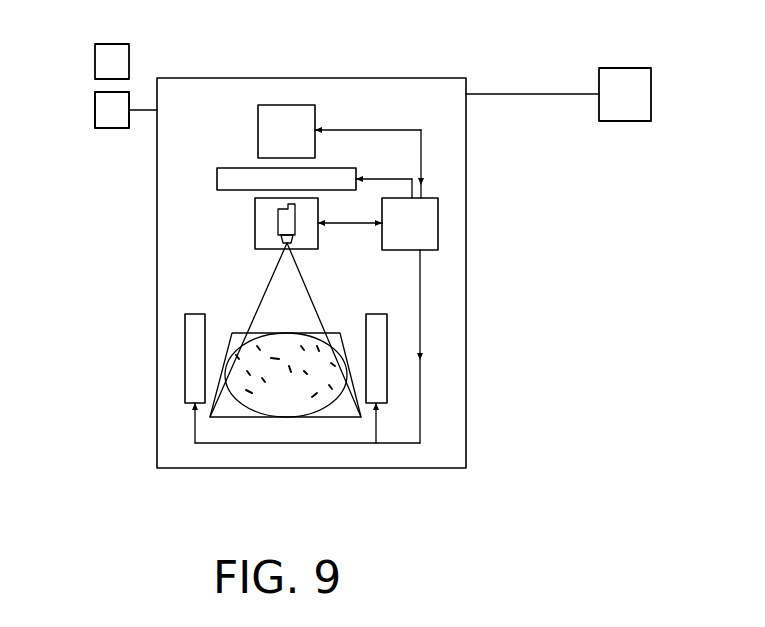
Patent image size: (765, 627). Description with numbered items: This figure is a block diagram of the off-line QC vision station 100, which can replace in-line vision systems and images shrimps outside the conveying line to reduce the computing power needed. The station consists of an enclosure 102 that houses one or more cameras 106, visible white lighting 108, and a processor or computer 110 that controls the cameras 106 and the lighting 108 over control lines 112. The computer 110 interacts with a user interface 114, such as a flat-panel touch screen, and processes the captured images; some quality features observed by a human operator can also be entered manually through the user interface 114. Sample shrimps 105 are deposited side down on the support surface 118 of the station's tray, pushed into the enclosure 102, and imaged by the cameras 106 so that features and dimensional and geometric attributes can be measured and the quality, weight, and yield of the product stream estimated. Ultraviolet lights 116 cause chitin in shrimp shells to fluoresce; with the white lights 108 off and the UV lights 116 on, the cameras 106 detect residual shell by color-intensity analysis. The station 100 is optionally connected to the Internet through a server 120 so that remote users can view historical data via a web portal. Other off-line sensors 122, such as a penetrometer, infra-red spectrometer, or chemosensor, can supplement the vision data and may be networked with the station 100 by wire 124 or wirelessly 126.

The off-line QC vision station 100 is at (476, 70).
The enclosure 102 is at (157, 433).
The shrimps 105 is at (311, 400).
The cameras 106 is at (258, 218).
The visible white lighting 108 is at (217, 180).
The processor or computer 110 is at (436, 223).
The control lines 112 is at (422, 146).
The user interface 114 is at (290, 106).
The ultraviolet (UV) lights 116 is at (185, 353).
The support surface 118 is at (243, 412).
The server 120 is at (618, 121).
The other off-line sensors 122 is at (90, 48).
The wire 124 is at (143, 113).
The wireless connection 126 is at (140, 56).